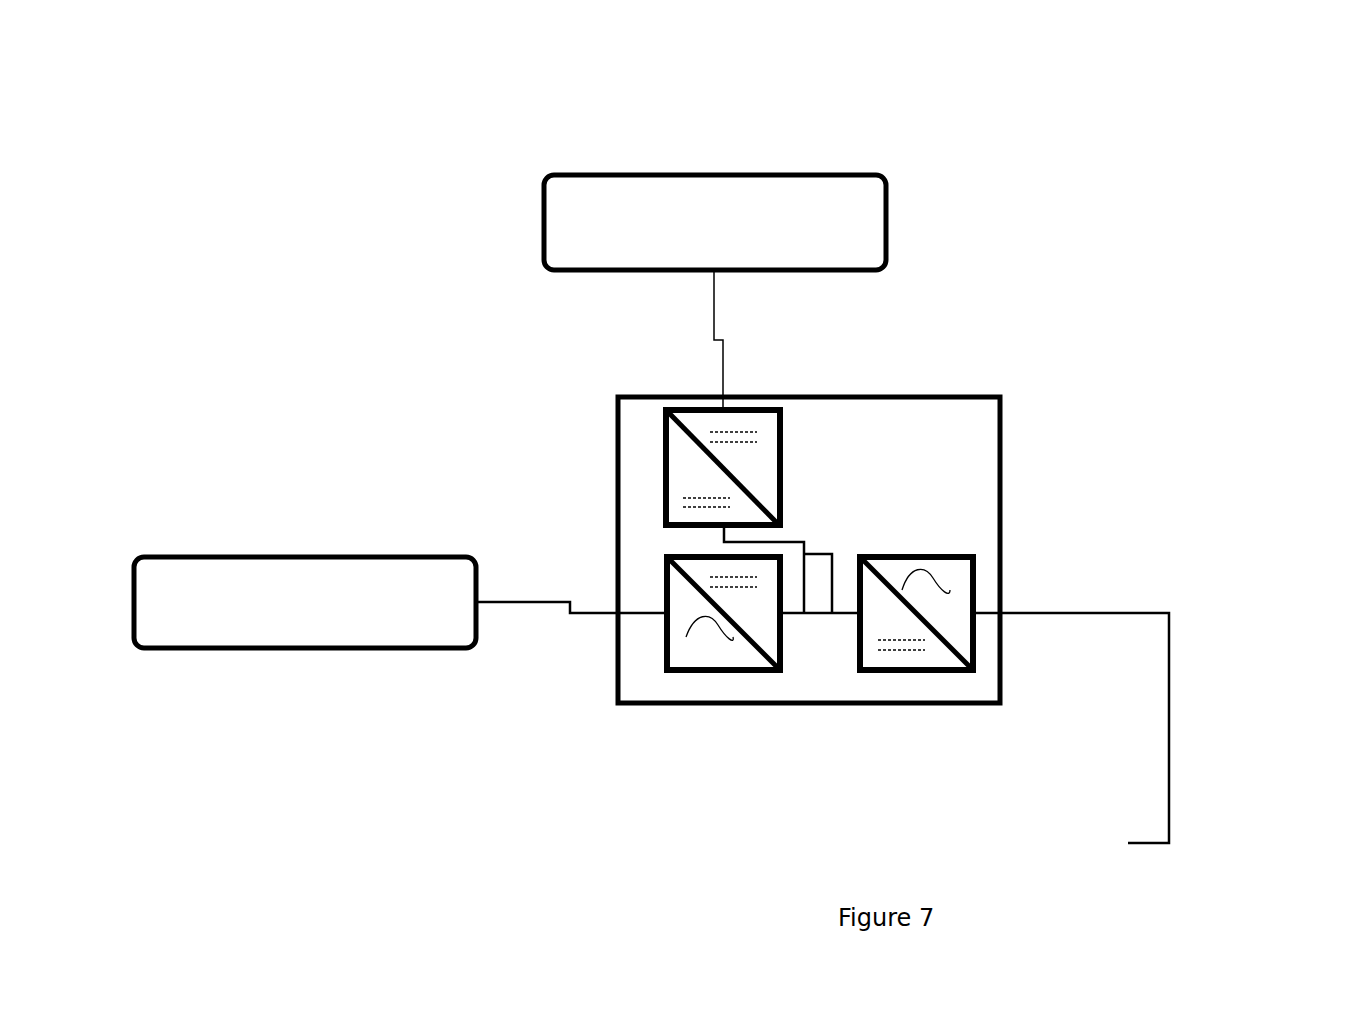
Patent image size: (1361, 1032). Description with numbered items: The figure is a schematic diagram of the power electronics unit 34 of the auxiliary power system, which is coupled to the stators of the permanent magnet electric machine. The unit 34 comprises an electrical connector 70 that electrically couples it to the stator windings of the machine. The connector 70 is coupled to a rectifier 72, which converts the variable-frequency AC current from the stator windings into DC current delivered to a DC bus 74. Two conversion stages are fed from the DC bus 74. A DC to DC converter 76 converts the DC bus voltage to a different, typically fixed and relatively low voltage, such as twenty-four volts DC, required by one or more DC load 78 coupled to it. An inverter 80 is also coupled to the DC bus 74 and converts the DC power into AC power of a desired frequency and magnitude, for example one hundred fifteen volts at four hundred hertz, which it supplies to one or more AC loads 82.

The power electronics unit 34 is at (1052, 479).
The electrical connector 70 is at (1162, 670).
The rectifier 72 is at (918, 672).
The DC bus 74 is at (803, 613).
The DC to DC converter 76 is at (665, 510).
The DC load 78 is at (714, 173).
The inverter 80 is at (723, 672).
The AC load 82 is at (270, 555).